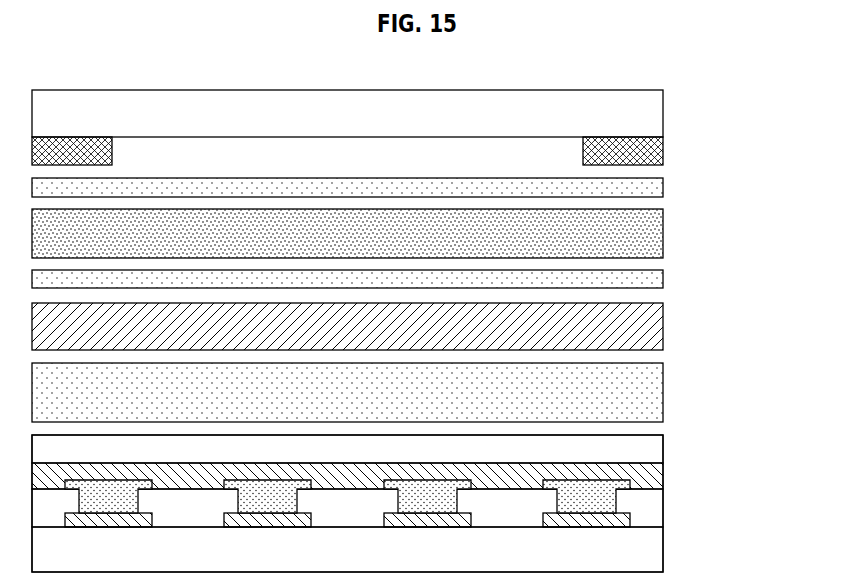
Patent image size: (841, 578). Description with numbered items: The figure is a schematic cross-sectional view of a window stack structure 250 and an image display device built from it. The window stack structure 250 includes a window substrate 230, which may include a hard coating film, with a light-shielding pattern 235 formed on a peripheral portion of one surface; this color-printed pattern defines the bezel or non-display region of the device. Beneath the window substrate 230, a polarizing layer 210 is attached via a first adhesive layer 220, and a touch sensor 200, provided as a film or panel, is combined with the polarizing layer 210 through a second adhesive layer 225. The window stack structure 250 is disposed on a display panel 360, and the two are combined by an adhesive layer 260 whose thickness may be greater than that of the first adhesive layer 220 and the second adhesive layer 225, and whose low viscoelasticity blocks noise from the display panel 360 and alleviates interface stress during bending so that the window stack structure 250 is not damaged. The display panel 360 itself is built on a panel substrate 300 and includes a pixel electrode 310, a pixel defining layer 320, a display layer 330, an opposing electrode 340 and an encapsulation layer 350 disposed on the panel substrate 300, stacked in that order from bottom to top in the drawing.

The touch sensor 200 is at (658, 323).
The polarizing layer 210 is at (658, 233).
The first adhesive layer 220 is at (658, 186).
The second adhesive layer 225 is at (658, 280).
The window substrate 230 is at (658, 113).
The light-shielding pattern 235 is at (658, 148).
The window stack structure 250 is at (754, 106).
The adhesive layer 260 is at (658, 391).
The panel substrate 300 is at (657, 550).
The pixel electrode 310 is at (628, 517).
The pixel defining layer 320 is at (657, 500).
The display layer 330 is at (597, 483).
The opposing electrode 340 is at (660, 478).
The encapsulation layer 350 is at (657, 450).
The display panel 360 is at (754, 418).